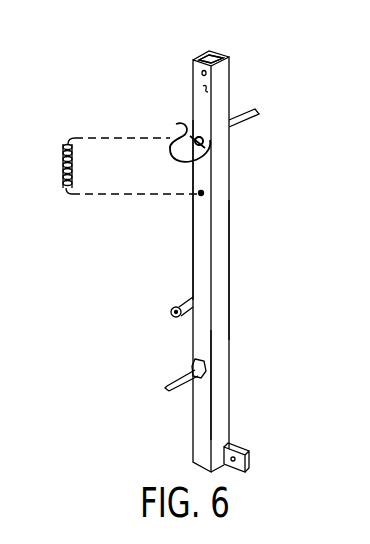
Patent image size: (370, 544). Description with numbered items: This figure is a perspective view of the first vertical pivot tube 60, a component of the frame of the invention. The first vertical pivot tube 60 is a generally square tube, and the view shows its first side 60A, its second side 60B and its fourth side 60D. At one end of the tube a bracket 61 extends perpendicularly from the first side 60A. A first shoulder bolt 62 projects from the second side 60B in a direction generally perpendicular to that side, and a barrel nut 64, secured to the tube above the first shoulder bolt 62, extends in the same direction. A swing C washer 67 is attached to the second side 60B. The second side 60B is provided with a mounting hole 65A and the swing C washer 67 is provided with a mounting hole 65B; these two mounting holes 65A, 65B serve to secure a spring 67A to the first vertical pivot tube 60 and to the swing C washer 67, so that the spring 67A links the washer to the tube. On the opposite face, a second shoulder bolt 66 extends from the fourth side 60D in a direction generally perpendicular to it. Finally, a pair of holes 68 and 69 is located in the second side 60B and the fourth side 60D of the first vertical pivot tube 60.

The first vertical pivot tube 60 is at (256, 226).
The first side 60A is at (222, 397).
The second side 60B is at (205, 233).
The fourth side 60D is at (232, 271).
The bracket 61 is at (243, 446).
The first shoulder bolt 62 is at (166, 392).
The barrel nut 64 is at (176, 307).
The mounting hole 65A is at (203, 192).
The mounting hole 65B is at (212, 134).
The second shoulder bolt 66 is at (248, 111).
The swing C washer 67 is at (177, 124).
The spring 67A is at (64, 150).
The hole 68 is at (208, 88).
The hole 69 is at (208, 51).